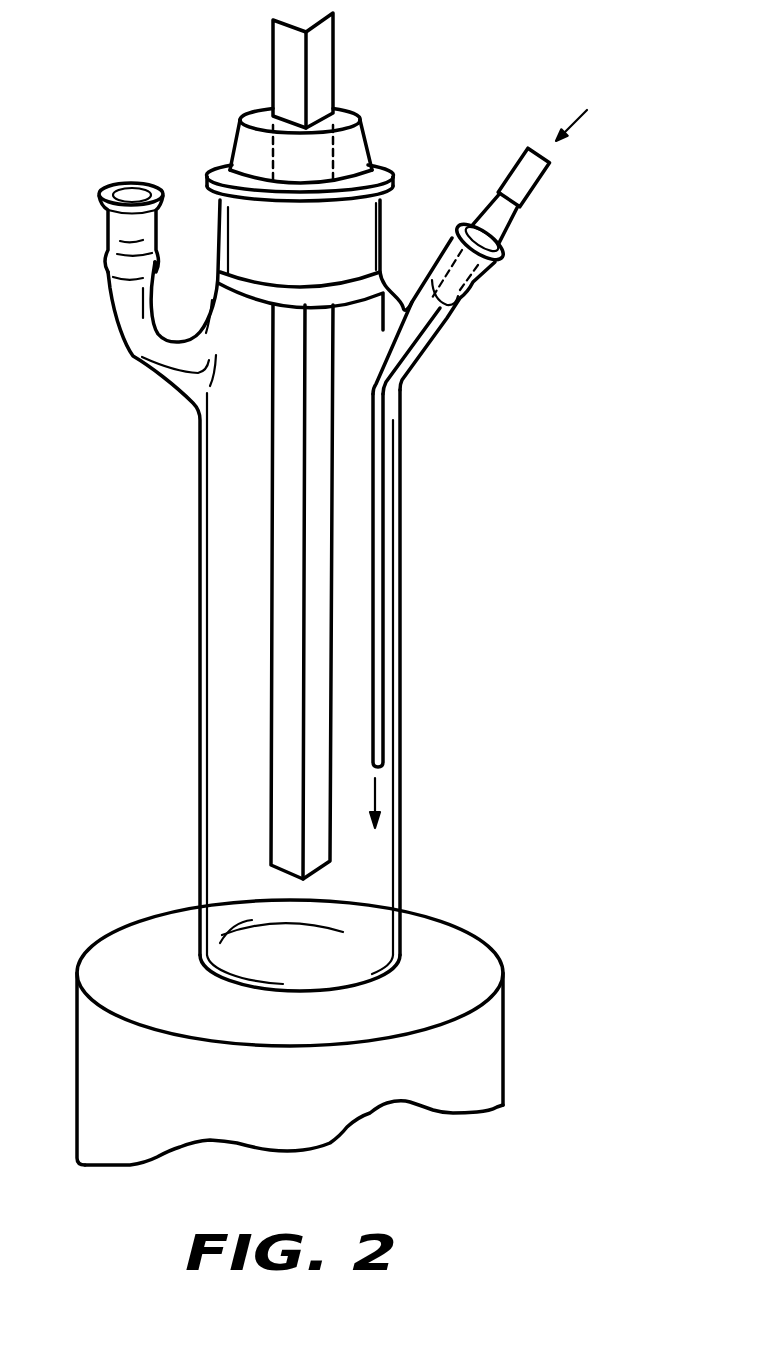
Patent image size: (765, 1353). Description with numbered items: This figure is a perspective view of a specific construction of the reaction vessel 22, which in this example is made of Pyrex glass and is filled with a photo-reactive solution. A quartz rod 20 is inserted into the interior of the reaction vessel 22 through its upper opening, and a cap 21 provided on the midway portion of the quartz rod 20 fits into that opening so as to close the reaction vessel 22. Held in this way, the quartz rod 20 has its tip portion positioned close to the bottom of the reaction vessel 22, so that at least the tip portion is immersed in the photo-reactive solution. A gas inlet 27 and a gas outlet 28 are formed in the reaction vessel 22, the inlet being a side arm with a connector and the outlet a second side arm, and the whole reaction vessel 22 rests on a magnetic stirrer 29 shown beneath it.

The quartz rod 20 is at (275, 575).
The cap 21 is at (366, 133).
The reaction vessel 22 is at (400, 792).
The gas inlet 27 is at (483, 287).
The gas outlet 28 is at (137, 183).
The magnetic stirrer 29 is at (503, 1045).